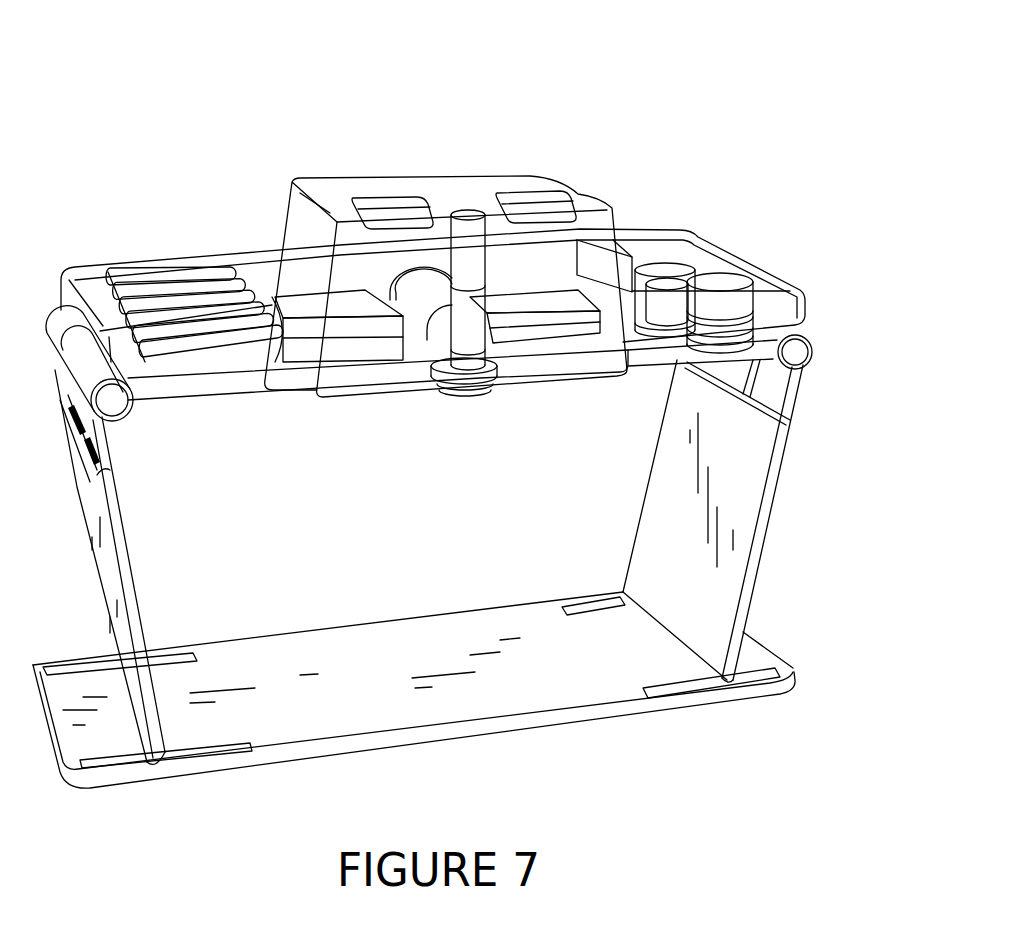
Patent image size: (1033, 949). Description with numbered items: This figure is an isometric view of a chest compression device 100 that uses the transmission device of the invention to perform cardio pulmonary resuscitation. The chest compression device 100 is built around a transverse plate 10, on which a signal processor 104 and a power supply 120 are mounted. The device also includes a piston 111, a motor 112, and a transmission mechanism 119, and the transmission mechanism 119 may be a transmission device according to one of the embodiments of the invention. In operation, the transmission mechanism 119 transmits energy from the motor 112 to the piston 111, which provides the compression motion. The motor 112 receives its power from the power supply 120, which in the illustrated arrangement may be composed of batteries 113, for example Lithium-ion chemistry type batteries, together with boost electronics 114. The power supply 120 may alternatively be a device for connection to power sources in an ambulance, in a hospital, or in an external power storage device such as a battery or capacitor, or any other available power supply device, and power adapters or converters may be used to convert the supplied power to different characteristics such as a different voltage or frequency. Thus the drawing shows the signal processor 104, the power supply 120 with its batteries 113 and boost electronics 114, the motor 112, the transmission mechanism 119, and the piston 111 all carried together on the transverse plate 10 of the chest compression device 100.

The chest compression device 100 is at (760, 118).
The transverse plate 10 is at (810, 336).
The signal processor 104 is at (550, 297).
The piston 111 is at (454, 402).
The motor 112 is at (425, 340).
The batteries 113 is at (151, 257).
The boost electronics 114 is at (712, 265).
The transmission mechanism 119 is at (488, 344).
The power supply 120 is at (650, 240).